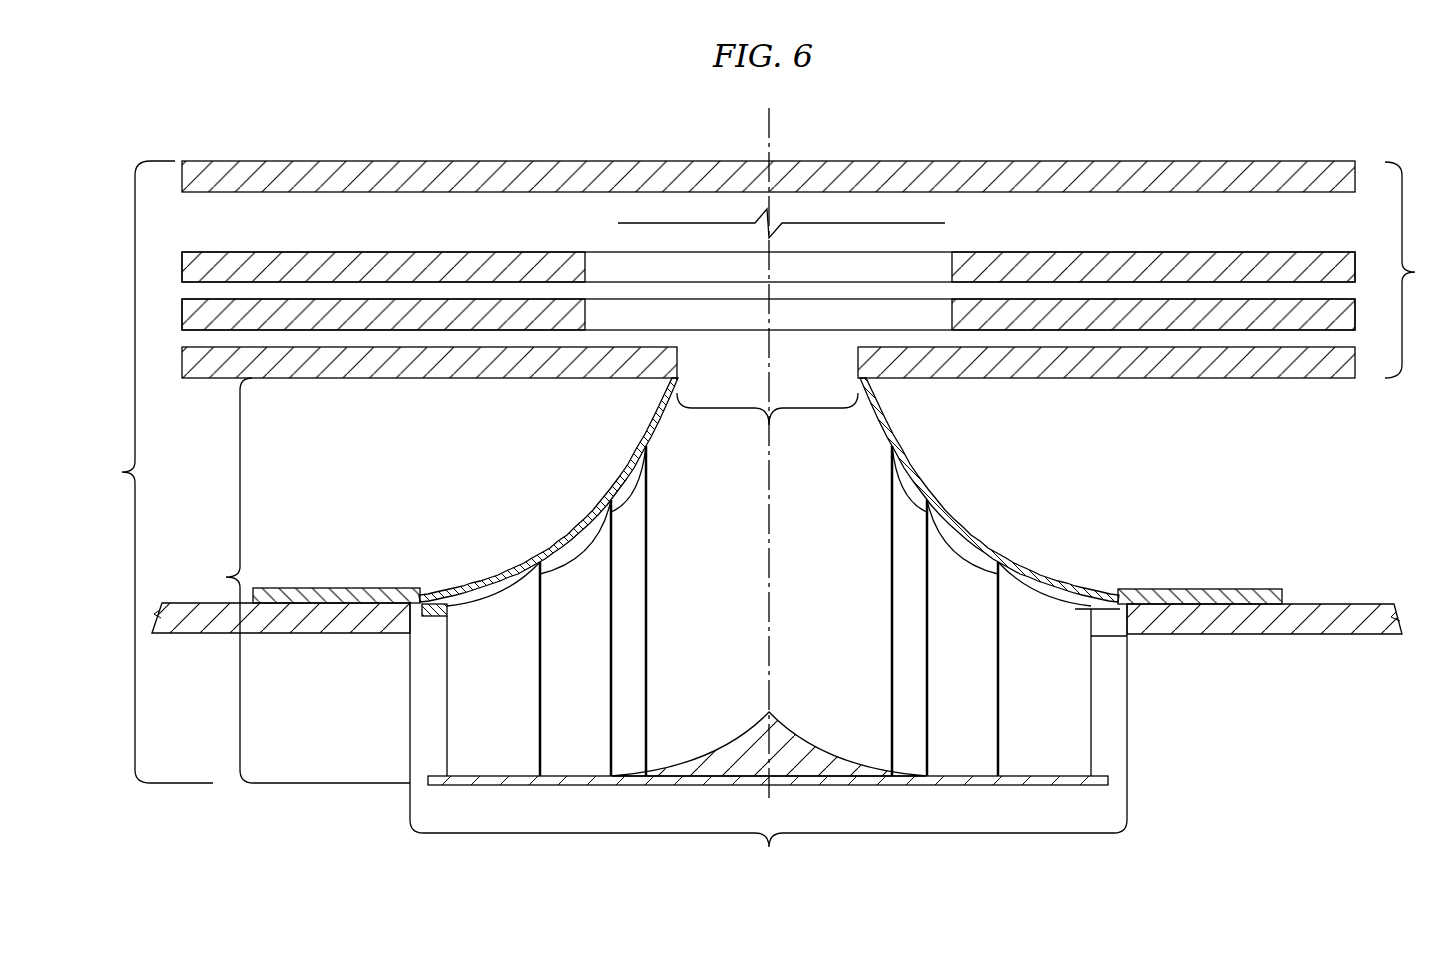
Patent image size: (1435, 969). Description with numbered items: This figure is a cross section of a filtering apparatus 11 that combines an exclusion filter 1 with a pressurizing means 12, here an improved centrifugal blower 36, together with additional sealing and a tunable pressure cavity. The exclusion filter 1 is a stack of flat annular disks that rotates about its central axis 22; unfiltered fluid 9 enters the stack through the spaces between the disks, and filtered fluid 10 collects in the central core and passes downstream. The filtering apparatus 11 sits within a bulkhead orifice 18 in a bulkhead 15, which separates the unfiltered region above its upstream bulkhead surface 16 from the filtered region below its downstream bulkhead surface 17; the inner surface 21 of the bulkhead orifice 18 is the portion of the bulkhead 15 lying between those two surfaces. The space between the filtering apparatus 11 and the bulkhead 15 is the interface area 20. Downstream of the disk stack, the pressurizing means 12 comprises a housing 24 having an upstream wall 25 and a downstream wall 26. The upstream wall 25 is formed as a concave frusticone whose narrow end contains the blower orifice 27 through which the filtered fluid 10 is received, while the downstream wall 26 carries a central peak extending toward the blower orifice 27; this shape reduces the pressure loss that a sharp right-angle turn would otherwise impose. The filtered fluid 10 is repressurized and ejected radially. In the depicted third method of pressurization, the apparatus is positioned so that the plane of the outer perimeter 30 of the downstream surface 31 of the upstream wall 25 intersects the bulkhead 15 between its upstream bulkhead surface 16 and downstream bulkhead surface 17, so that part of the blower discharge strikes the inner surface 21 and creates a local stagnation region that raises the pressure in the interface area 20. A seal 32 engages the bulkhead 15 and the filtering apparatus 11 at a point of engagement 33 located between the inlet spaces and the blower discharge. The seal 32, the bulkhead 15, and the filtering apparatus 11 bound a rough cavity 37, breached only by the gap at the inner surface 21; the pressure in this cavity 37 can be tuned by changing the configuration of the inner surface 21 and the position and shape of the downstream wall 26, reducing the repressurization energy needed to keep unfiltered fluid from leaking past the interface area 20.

The exclusion filter 1 is at (1409, 270).
The unfiltered fluid 9 is at (1310, 225).
The filtered fluid 10 is at (1108, 620).
The filtering apparatus 11 is at (155, 472).
The pressurizing means 12 is at (291, 580).
The improved centrifugal blower 36 is at (291, 580).
The bulkhead 15 is at (1266, 636).
The upstream bulkhead surface 16 is at (1362, 605).
The downstream bulkhead surface 17 is at (1366, 636).
The bulkhead orifice 18 is at (768, 742).
The interface area 20 is at (353, 512).
The inner surface of bulkhead orifice 21 is at (417, 632).
The central axis 22 is at (770, 128).
The housing 24 is at (769, 606).
The upstream wall 25 is at (769, 492).
The downstream wall 26 is at (950, 787).
The blower orifice 27 is at (767, 425).
The outer perimeter 30 is at (422, 618).
The downstream surface 31 is at (657, 428).
The seal 32 is at (1187, 590).
The point of engagement 33 is at (1033, 573).
The cavity 37 is at (1122, 600).